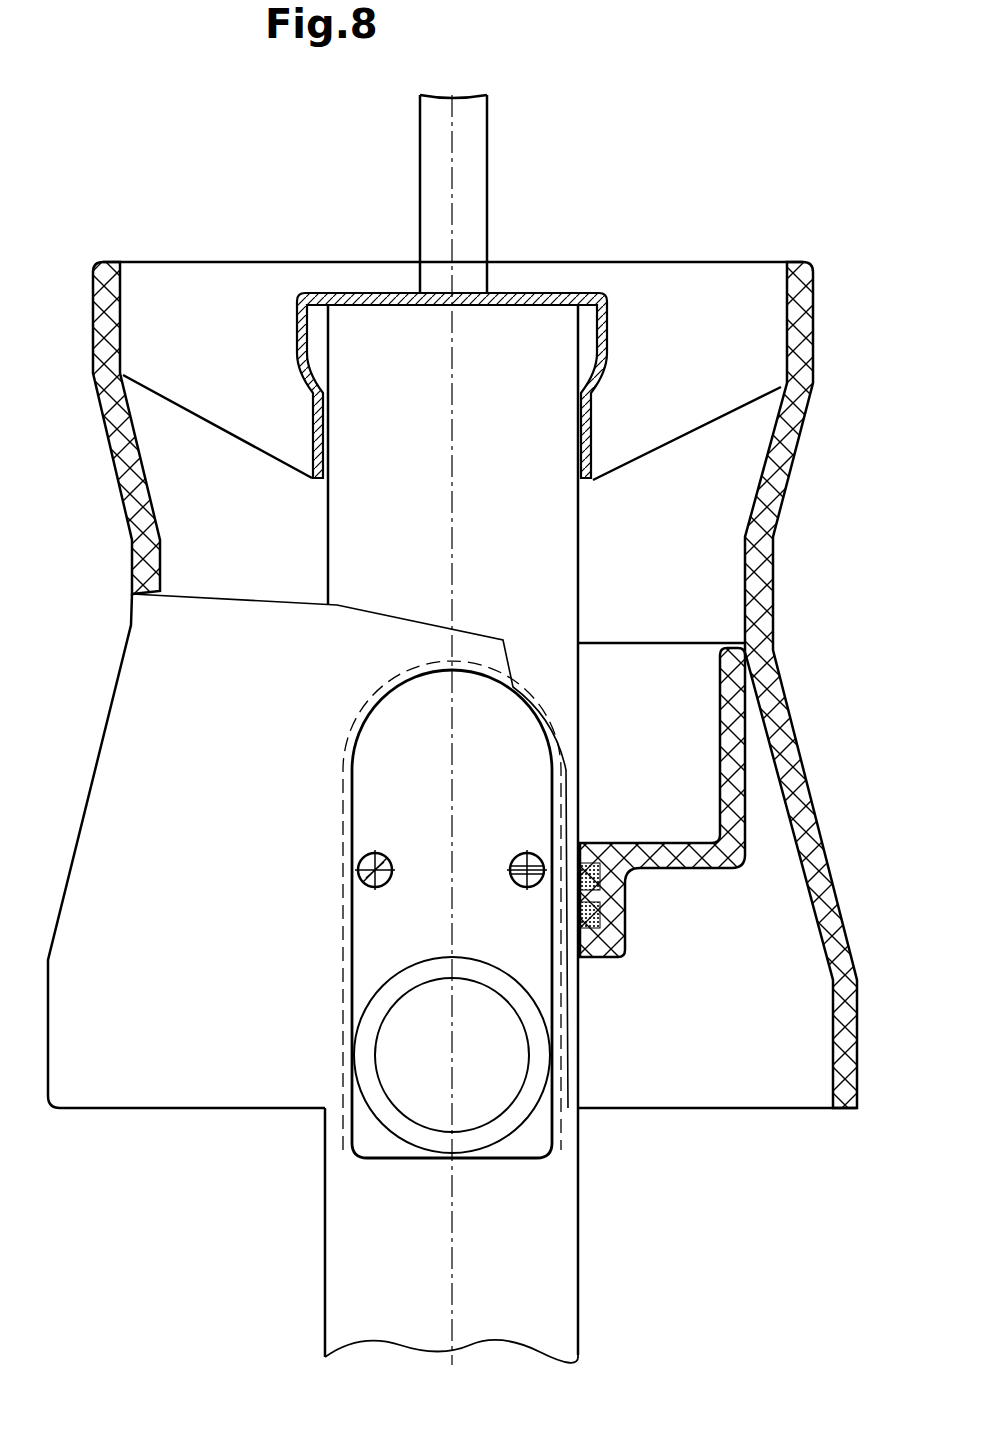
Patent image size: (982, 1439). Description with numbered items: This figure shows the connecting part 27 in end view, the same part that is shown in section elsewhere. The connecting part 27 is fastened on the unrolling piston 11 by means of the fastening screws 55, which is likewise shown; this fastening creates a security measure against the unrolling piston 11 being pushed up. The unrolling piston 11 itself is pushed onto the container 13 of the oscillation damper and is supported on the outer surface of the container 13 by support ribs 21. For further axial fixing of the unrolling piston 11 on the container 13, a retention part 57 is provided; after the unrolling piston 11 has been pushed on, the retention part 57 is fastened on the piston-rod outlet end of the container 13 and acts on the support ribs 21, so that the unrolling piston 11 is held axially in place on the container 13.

The retention part 57 is at (583, 296).
The support ribs 21 is at (688, 590).
The unrolling piston 11 is at (757, 653).
The connecting part 27 is at (502, 803).
The fastening screws 55 is at (533, 885).
The container 13 is at (542, 1238).